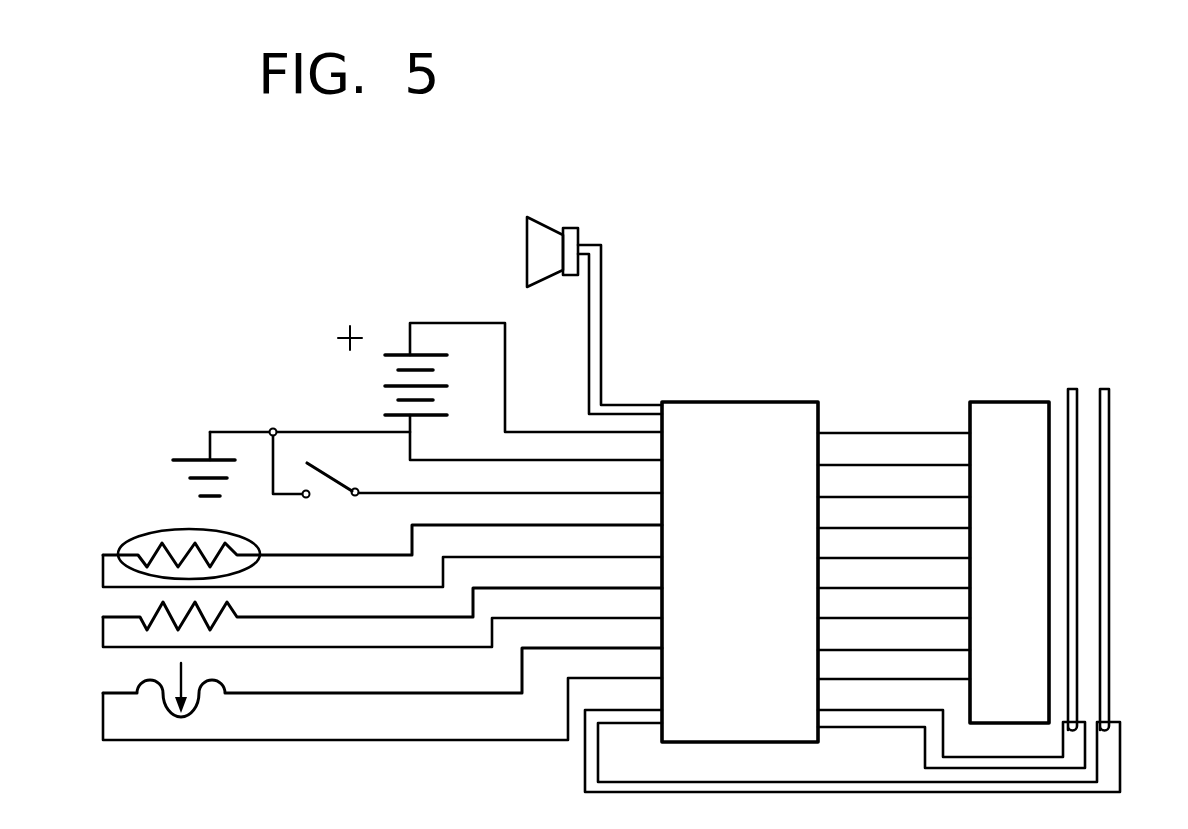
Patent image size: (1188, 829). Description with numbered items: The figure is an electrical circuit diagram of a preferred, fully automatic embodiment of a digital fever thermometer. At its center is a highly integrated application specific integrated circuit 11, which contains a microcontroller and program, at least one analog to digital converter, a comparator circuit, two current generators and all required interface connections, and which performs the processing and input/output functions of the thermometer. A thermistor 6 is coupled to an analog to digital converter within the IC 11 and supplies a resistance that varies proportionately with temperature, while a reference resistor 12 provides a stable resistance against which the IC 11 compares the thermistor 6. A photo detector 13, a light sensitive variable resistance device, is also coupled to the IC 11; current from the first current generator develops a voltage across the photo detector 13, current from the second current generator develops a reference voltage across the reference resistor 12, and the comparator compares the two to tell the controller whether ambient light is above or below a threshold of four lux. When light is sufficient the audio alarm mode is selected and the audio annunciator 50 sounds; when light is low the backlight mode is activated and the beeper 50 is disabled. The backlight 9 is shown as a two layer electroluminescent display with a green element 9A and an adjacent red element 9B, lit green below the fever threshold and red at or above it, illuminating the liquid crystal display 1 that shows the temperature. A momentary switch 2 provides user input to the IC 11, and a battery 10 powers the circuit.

The liquid crystal display 1 is at (985, 402).
The momentary switch 2 is at (326, 478).
The thermistor 6 is at (190, 528).
The backlight 9 is at (1085, 495).
The green element 9A is at (1065, 397).
The red element 9B is at (1127, 532).
The battery 10 is at (398, 350).
The application specific integrated circuit 11 is at (740, 402).
The reference resistor 12 is at (150, 612).
The photo detector 13 is at (150, 680).
The audio annunciator 50 is at (548, 222).